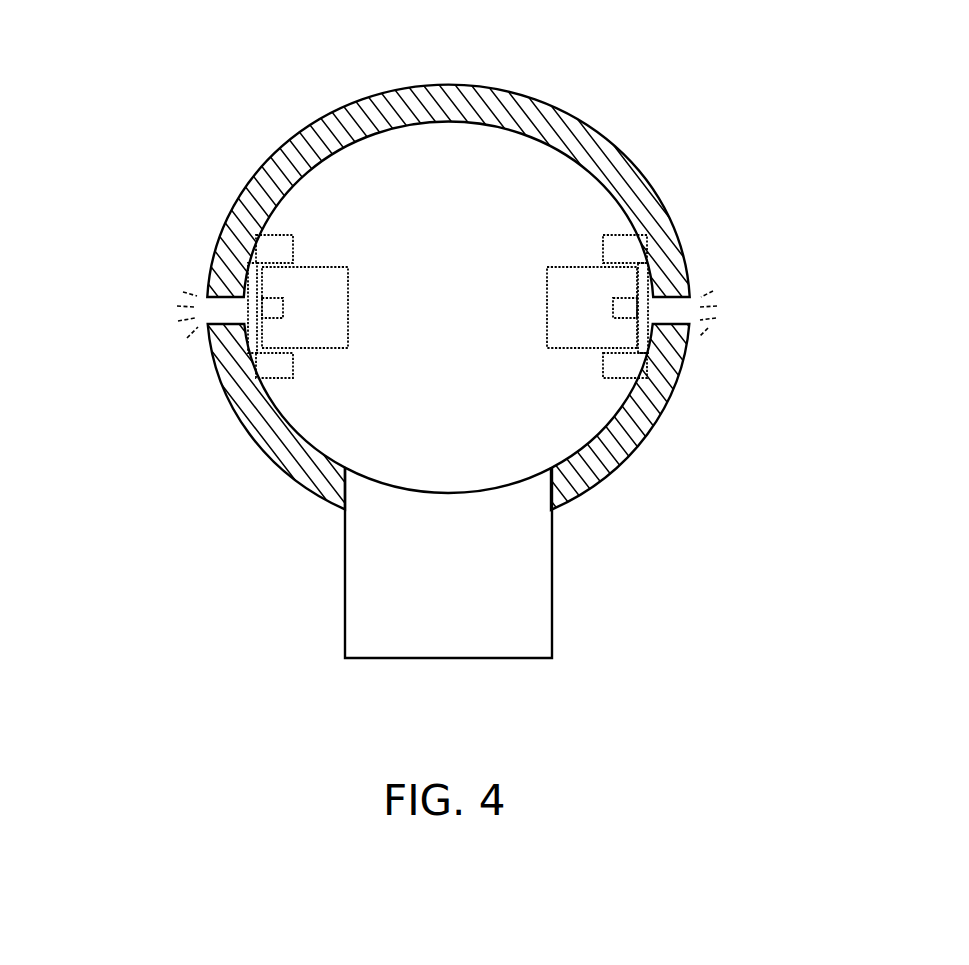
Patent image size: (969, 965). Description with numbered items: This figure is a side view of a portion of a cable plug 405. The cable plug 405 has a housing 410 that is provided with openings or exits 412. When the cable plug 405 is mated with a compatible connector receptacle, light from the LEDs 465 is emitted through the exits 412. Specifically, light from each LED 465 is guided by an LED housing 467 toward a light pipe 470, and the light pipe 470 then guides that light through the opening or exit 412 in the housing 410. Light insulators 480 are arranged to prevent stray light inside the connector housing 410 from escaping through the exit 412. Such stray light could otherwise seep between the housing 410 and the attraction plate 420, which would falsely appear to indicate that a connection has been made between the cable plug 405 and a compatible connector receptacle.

The cable plug 405 is at (722, 107).
The housing 410 is at (558, 115).
The exit 412 is at (213, 303).
The attraction plate 420 is at (527, 595).
The LED 465 is at (283, 310).
The LED housing 467 is at (317, 267).
The light pipe 470 is at (250, 335).
The light insulator 480 is at (267, 252).